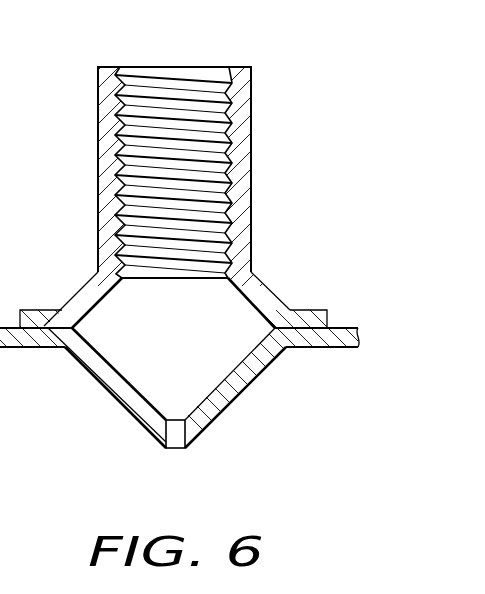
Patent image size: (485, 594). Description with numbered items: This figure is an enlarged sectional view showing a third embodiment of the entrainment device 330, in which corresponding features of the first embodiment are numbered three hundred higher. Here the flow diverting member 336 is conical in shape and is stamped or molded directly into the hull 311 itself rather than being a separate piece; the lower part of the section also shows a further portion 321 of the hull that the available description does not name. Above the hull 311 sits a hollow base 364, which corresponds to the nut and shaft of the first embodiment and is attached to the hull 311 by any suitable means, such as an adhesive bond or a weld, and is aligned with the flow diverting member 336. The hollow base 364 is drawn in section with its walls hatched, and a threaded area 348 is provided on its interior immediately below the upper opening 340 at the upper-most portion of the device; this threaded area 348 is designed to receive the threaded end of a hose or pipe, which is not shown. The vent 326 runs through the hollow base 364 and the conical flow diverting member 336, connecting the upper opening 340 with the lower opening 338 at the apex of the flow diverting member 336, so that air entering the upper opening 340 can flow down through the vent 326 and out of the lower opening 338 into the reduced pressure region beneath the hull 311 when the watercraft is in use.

The upper opening 340 is at (242, 176).
The hollow base 364 is at (105, 145).
The threaded area 348 is at (236, 155).
The hull 311 is at (336, 323).
The plate 321 is at (318, 351).
The vent 326 is at (135, 356).
The flow diverting member 336 is at (235, 391).
The lower opening 338 is at (171, 450).
The entrainment device 330 is at (200, 390).